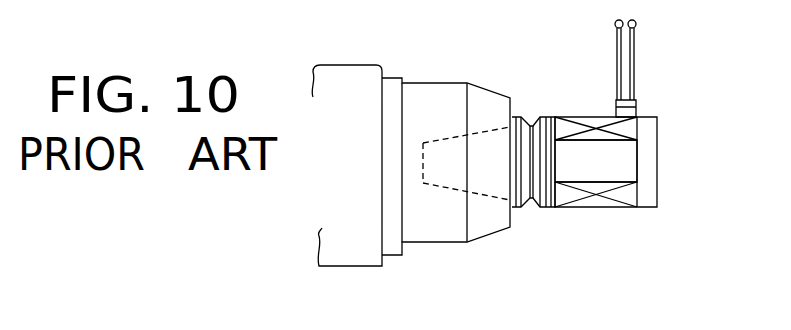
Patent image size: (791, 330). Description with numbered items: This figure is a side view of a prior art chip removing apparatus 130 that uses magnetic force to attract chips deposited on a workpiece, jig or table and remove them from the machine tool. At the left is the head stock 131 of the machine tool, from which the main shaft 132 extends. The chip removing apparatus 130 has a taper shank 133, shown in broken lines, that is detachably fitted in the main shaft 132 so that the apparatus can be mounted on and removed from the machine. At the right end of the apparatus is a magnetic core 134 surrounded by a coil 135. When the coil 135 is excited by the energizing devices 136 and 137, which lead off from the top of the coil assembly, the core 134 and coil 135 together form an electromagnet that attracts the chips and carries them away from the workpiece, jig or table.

The chip removing apparatus 130 is at (532, 104).
The head stock 131 is at (340, 63).
The main shaft 132 is at (428, 83).
The taper shank 133 is at (440, 188).
The magnetic core 134 is at (623, 155).
The coil 135 is at (602, 208).
The energizing device 136 is at (637, 113).
The energizing device 137 is at (615, 108).